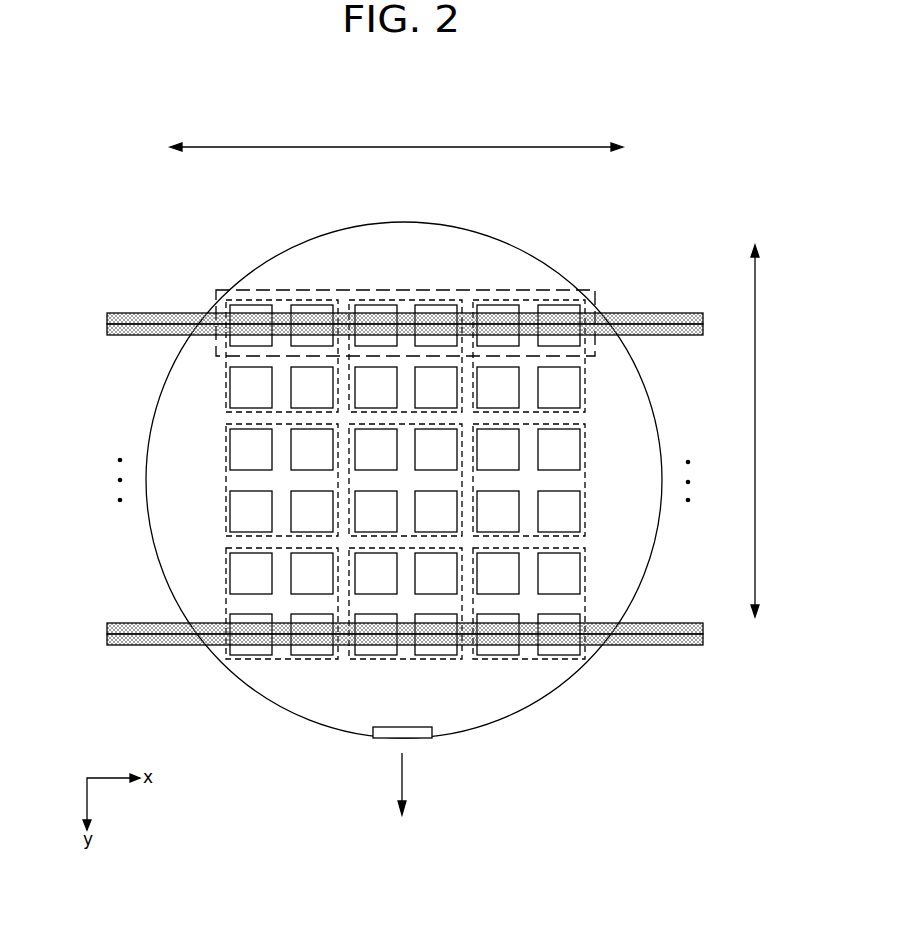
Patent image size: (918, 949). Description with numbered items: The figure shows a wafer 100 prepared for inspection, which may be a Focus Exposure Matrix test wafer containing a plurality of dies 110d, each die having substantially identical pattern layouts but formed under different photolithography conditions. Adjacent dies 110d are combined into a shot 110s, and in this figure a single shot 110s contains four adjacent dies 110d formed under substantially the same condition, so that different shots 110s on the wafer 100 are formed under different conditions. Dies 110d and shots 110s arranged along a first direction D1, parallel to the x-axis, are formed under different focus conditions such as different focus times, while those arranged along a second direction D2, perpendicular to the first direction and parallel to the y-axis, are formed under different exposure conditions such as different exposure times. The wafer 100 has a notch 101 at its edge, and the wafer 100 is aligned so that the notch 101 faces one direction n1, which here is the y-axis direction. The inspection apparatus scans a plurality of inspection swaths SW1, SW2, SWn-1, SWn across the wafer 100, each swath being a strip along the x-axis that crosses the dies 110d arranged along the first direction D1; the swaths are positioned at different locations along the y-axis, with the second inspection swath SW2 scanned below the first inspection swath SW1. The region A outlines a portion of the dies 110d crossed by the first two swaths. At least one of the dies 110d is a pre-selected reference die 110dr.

The wafer 100 is at (277, 253).
The notch 101 is at (398, 728).
The region A is at (595, 290).
The die 110d is at (345, 478).
The reference die 110dr is at (372, 305).
The shot 110s is at (228, 399).
The first inspection swath SW1 is at (107, 318).
The second inspection swath SW2 is at (107, 331).
The inspection swath SWn-1 is at (107, 627).
The nth inspection swath SWn is at (107, 640).
The first direction D1 is at (572, 147).
The second direction D2 is at (755, 273).
The one direction n1 is at (403, 796).